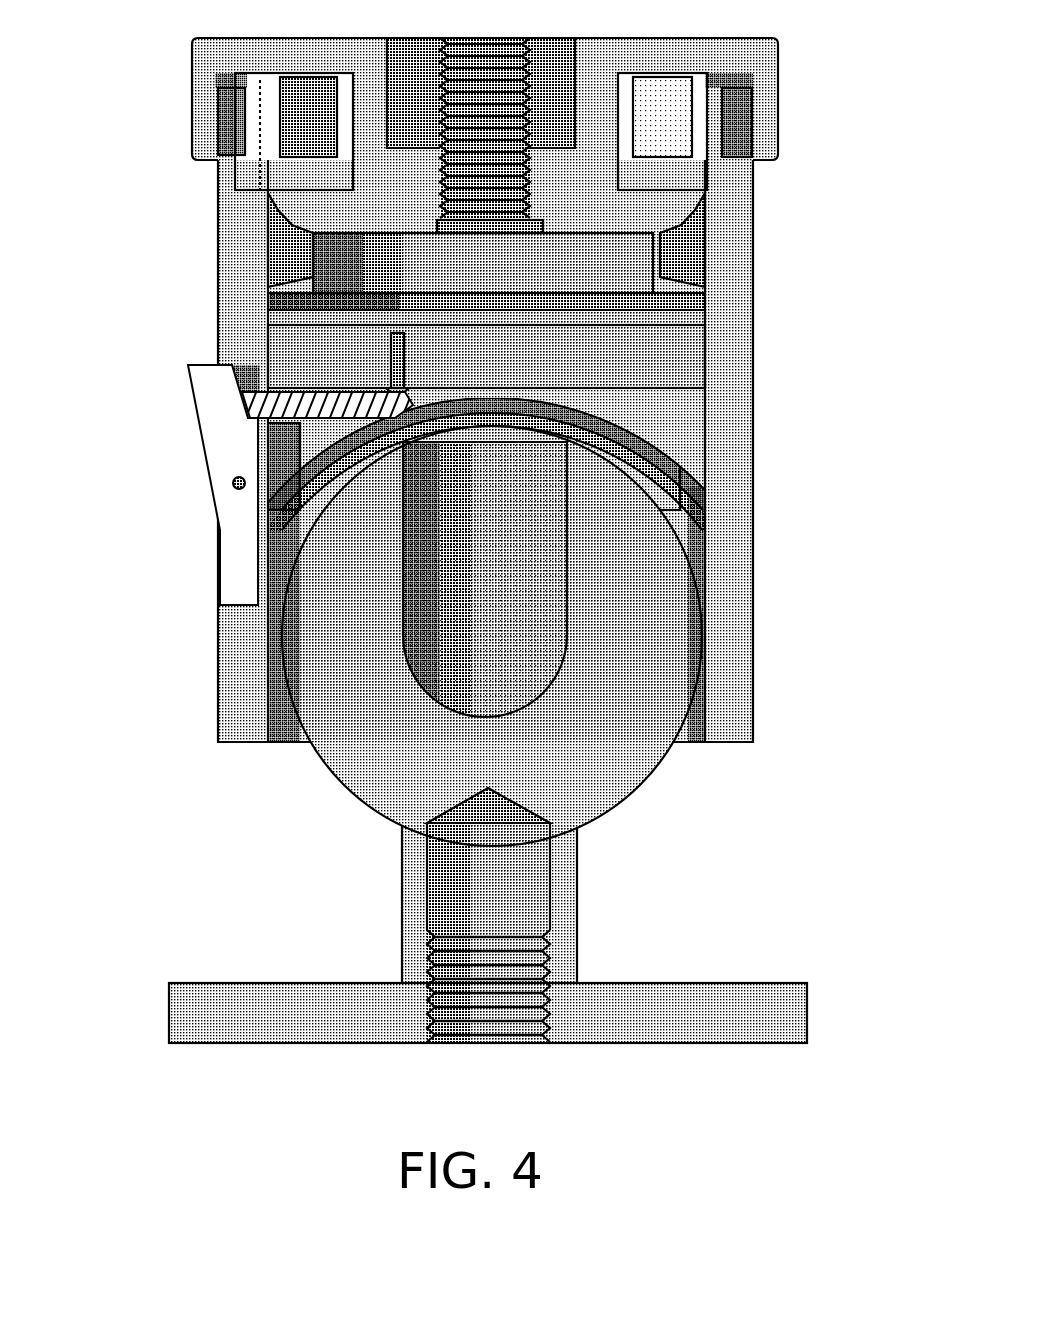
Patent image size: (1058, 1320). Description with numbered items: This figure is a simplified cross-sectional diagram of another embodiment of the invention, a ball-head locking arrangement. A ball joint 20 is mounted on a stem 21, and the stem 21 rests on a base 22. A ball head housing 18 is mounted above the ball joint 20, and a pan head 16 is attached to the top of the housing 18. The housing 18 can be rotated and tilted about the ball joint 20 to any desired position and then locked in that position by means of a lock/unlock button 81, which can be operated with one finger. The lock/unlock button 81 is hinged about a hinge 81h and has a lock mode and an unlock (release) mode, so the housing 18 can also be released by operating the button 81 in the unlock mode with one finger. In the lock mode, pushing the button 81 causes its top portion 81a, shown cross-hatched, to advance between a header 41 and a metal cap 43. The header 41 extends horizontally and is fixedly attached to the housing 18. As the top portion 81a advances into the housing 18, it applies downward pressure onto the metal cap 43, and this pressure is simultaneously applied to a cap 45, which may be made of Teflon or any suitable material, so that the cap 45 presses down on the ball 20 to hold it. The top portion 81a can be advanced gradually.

The pan head 16 is at (767, 60).
The ball head housing 18 is at (747, 573).
The ball joint 20 is at (353, 775).
The stem 21 is at (573, 895).
The base 22 is at (810, 1007).
The header 41 is at (680, 365).
The metal cap 43 is at (677, 475).
The cap 45 is at (690, 523).
The lock/unlock button 81 is at (225, 437).
The top portion 81a is at (240, 403).
The hinge 81h is at (237, 490).